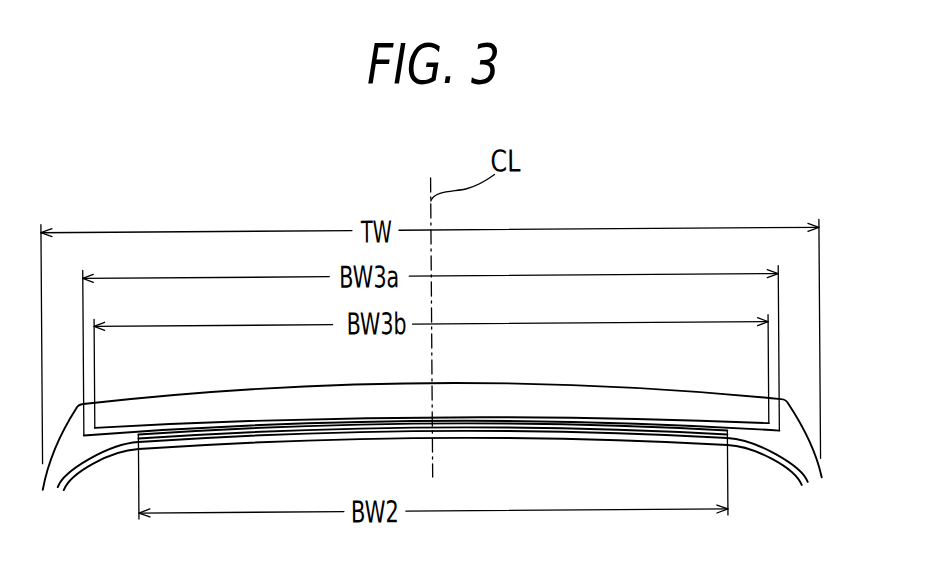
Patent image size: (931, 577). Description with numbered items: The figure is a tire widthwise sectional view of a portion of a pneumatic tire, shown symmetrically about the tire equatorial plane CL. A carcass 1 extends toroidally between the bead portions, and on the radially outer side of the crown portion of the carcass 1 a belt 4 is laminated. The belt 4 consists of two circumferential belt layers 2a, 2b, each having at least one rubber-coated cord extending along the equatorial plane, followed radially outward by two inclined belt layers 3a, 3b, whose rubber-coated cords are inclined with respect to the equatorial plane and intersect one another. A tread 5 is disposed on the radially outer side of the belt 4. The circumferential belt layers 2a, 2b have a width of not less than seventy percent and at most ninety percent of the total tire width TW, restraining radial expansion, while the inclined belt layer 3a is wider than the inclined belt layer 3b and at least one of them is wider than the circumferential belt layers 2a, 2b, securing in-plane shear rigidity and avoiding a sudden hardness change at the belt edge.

The carcass 1 is at (83, 477).
The circumferential belt layer 2a is at (544, 434).
The circumferential belt layer 2b is at (622, 430).
The inclined belt layer 3a is at (655, 421).
The inclined belt layer 3b is at (574, 418).
The belt 4 is at (431, 382).
The tread 5 is at (168, 393).